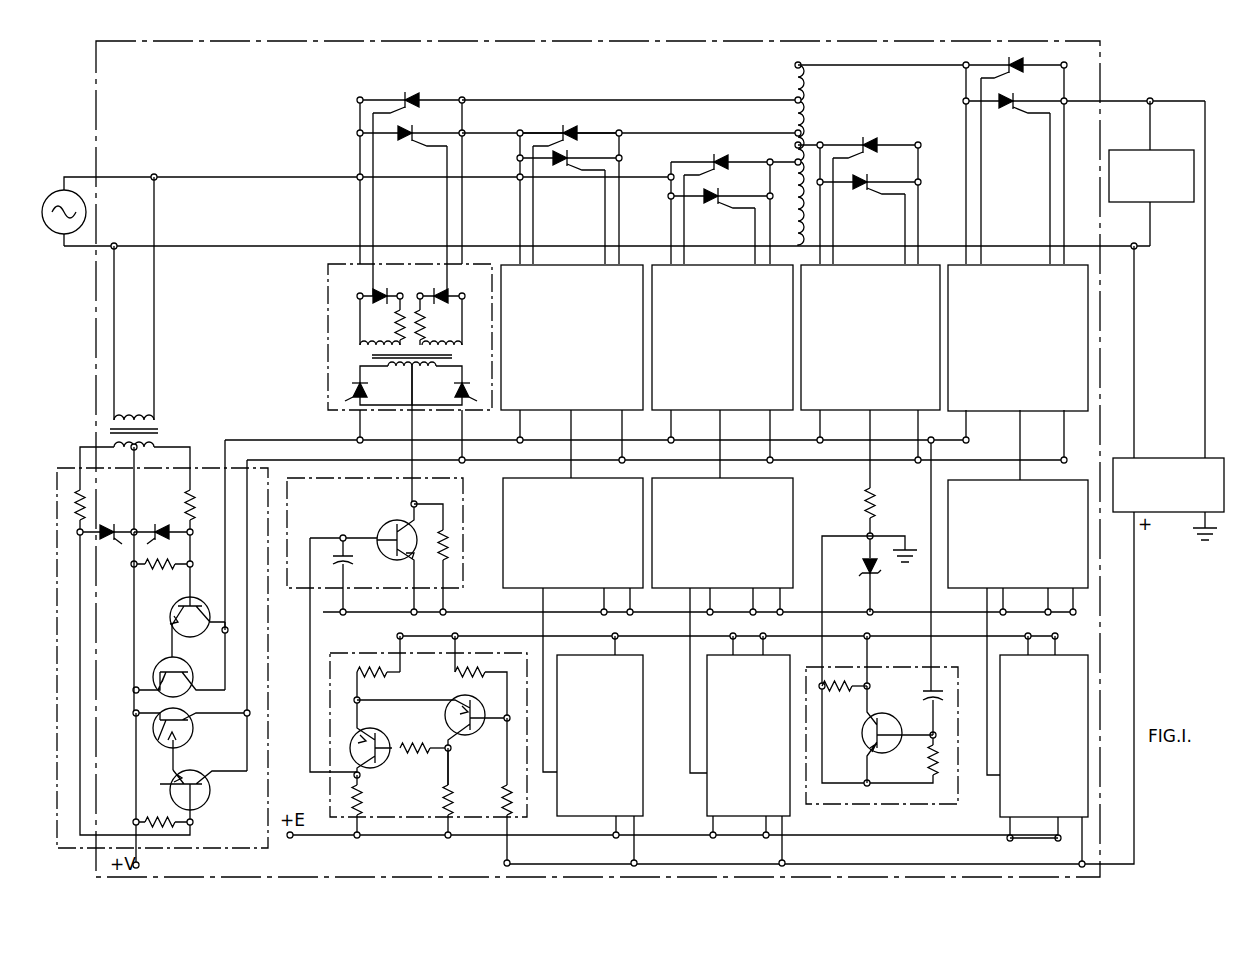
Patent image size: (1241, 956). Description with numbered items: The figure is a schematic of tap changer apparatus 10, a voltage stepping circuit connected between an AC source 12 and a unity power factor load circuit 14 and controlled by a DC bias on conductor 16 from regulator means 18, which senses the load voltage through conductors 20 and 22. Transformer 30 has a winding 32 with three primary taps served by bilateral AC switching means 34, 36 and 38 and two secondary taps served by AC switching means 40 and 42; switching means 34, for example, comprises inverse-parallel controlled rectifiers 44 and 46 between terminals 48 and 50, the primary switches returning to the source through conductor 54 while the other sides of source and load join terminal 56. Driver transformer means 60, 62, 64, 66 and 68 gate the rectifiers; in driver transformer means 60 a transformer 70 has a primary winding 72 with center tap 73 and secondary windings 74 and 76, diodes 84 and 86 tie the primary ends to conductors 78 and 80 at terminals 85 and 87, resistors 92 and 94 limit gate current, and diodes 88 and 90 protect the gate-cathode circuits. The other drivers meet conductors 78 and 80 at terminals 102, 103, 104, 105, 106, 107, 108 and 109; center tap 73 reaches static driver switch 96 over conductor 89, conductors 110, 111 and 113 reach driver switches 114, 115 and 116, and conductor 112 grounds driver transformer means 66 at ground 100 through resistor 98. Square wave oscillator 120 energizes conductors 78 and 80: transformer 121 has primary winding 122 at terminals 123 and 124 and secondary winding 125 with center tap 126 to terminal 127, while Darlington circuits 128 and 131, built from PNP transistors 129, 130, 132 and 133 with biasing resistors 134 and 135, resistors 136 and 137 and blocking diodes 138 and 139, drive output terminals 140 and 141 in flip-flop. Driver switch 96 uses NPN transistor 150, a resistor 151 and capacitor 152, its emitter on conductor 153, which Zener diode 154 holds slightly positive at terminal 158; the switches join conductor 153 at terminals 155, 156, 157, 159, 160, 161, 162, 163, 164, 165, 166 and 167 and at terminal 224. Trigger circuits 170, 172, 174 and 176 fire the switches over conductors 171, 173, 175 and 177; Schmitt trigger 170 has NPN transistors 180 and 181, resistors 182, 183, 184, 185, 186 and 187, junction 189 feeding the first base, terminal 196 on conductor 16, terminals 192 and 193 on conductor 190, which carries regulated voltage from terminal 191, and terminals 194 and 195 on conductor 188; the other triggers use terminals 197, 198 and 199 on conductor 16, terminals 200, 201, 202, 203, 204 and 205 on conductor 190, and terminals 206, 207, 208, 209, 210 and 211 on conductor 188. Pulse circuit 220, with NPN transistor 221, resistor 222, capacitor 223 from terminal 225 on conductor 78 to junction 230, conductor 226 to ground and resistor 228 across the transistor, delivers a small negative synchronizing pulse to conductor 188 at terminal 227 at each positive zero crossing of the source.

The tap changer apparatus 10 is at (570, 42).
The source of AC potential 12 is at (86, 204).
The load circuit 14 is at (1170, 150).
The conductor 16 is at (1131, 866).
The regulator means 18 is at (1127, 456).
The conductor 20 is at (1134, 278).
The conductor 22 is at (1204, 275).
The transformer 30 is at (796, 160).
The winding 32 is at (781, 191).
The AC switching means 34 is at (411, 183).
The AC switching means 36 is at (569, 184).
The AC switching means 38 is at (733, 200).
The AC switching means 40 is at (859, 188).
The AC switching means 42 is at (1001, 154).
The silicon controlled rectifier 44 is at (412, 98).
The silicon controlled rectifier 46 is at (410, 162).
The terminal 48 is at (360, 133).
The terminal 50 is at (462, 103).
The conductor 54 is at (194, 177).
The terminal 56 is at (781, 227).
The driver transformer means 60 is at (330, 415).
The driver transformer means 62 is at (511, 414).
The driver transformer means 64 is at (664, 414).
The driver transformer means 66 is at (813, 414).
The driver transformer means 68 is at (963, 414).
The transformer 70 is at (477, 356).
The primary winding 72 is at (372, 369).
The center tap 73 is at (424, 370).
The secondary winding 74 is at (369, 309).
The secondary winding 76 is at (452, 309).
The conductor 78 is at (248, 440).
The conductor 80 is at (284, 460).
The diode 84 is at (368, 392).
The terminal 85 is at (371, 426).
The diode 86 is at (449, 388).
The terminal 87 is at (460, 458).
The diode 88 is at (394, 292).
The conductor 89 is at (412, 434).
The diode 90 is at (434, 287).
The current limiting resistor 92 is at (398, 320).
The current limiting resistor 94 is at (430, 324).
The driver switch 96 is at (414, 496).
The current limiting resistor 98 is at (876, 510).
The ground 100 is at (912, 540).
The terminal 102 is at (537, 426).
The terminal 103 is at (620, 458).
The terminal 104 is at (688, 426).
The terminal 105 is at (768, 458).
The terminal 106 is at (837, 426).
The terminal 107 is at (916, 458).
The terminal 108 is at (982, 426).
The terminal 109 is at (1062, 458).
The conductor 110 is at (575, 428).
The conductor 111 is at (722, 428).
The conductor 112 is at (872, 428).
The conductor 113 is at (1022, 428).
The driver switch 114 is at (503, 504).
The driver switch 115 is at (793, 494).
The driver switch 116 is at (1064, 480).
The square wave oscillator 120 is at (228, 855).
The transformer 121 is at (151, 429).
The primary winding 122 is at (135, 413).
The terminal 123 is at (120, 246).
The terminal 124 is at (154, 177).
The secondary winding 125 is at (106, 444).
The center tap 126 is at (138, 446).
The terminal 127 is at (140, 865).
The Darlington connected transistor circuit 128 is at (214, 666).
The PNP junction transistor 129 is at (172, 610).
The PNP junction transistor 130 is at (168, 664).
The Darlington connected transistor circuit 131 is at (191, 731).
The PNP junction transistor 132 is at (208, 772).
The PNP junction transistor 133 is at (180, 704).
The biasing resistor 134 is at (168, 572).
The biasing resistor 135 is at (168, 812).
The resistor 136 is at (84, 496).
The resistor 137 is at (184, 496).
The blocking diode 138 is at (110, 524).
The blocking diode 139 is at (162, 524).
The output terminal 140 is at (225, 630).
The output terminal 141 is at (236, 732).
The NPN transistor 150 is at (391, 520).
The resistor 151 is at (439, 557).
The capacitor 152 is at (349, 569).
The conductor 153 is at (535, 608).
The Zener diode 154 is at (862, 568).
The junction 155 is at (411, 610).
The junction 156 is at (444, 610).
The junction 157 is at (329, 608).
The terminal 158 is at (868, 610).
The terminal 159 is at (590, 602).
The terminal 160 is at (586, 612).
The terminal 161 is at (626, 612).
The terminal 162 is at (712, 612).
The terminal 163 is at (756, 612).
The terminal 164 is at (782, 612).
The terminal 165 is at (1004, 612).
The terminal 166 is at (1046, 614).
The terminal 167 is at (1074, 614).
The Schmitt trigger 170 is at (326, 794).
The conductor 171 is at (308, 628).
The trigger circuit 172 is at (648, 818).
The conductor 173 is at (548, 780).
The trigger circuit 174 is at (806, 804).
The conductor 175 is at (690, 760).
The trigger circuit 176 is at (1000, 812).
The conductor 177 is at (985, 676).
The NPN transistor 180 is at (470, 692).
The NPN transistor 181 is at (345, 730).
The resistor 182 is at (502, 796).
The resistor 183 is at (474, 672).
The resistor 184 is at (442, 796).
The resistor 185 is at (422, 752).
The resistor 186 is at (362, 798).
The resistor 187 is at (358, 671).
The conductor 188 is at (510, 642).
The junction 189 is at (504, 723).
The conductor 190 is at (339, 844).
The terminal 191 is at (292, 837).
The terminal 192 is at (450, 834).
The terminal 193 is at (358, 834).
The terminal 194 is at (454, 636).
The terminal 195 is at (398, 636).
The terminal 196 is at (505, 863).
The terminal 197 is at (616, 862).
The terminal 198 is at (782, 863).
The terminal 199 is at (1080, 864).
The terminal 200 is at (564, 834).
The terminal 201 is at (582, 824).
The terminal 202 is at (704, 841).
The terminal 203 is at (760, 834).
The terminal 204 is at (1008, 840).
The terminal 205 is at (1036, 826).
The terminal 206 is at (584, 633).
The terminal 207 is at (616, 636).
The terminal 208 is at (732, 632).
The terminal 209 is at (764, 638).
The terminal 210 is at (1026, 638).
The terminal 211 is at (1056, 638).
The pulse circuit 220 is at (916, 806).
The NPN transistor 221 is at (866, 734).
The resistor 222 is at (940, 780).
The capacitor 223 is at (920, 698).
The conductor 224 is at (930, 610).
The terminal 225 is at (931, 440).
The conductor 226 is at (824, 632).
The terminal 227 is at (868, 636).
The resistor 228 is at (854, 690).
The junction 230 is at (927, 740).